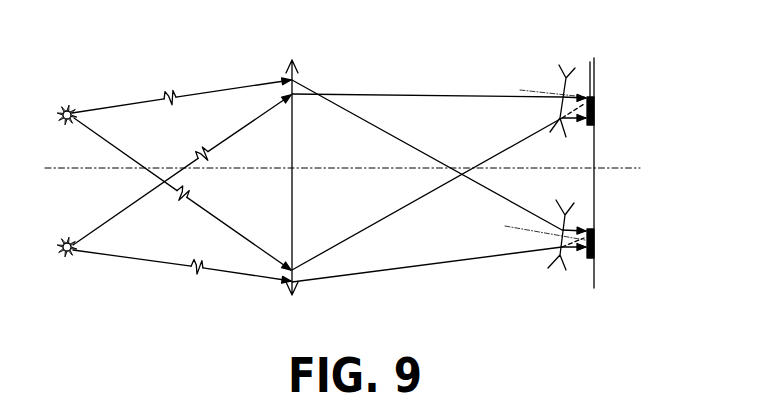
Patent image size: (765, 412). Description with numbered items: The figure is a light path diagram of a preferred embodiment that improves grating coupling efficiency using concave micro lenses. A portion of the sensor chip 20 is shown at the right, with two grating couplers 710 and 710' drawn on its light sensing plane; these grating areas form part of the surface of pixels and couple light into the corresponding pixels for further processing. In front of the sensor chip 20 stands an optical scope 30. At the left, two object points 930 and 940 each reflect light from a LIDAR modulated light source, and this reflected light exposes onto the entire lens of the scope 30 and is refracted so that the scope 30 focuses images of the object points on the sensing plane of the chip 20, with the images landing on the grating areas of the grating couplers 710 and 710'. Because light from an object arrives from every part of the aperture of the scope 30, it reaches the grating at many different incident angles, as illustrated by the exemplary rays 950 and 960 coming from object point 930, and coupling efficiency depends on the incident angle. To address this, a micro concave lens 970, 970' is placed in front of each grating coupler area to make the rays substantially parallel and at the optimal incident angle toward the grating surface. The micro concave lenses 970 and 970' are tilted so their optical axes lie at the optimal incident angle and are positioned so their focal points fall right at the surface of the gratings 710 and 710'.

The sensor chip 20 is at (595, 75).
The optical scope 30 is at (299, 60).
The grating coupler 710 is at (569, 75).
The grating coupler 710' is at (570, 274).
The object point 930 is at (71, 102).
The object point 940 is at (70, 262).
The incident ray 950 is at (512, 202).
The incident ray 960 is at (456, 261).
The micro concave lens 970 is at (523, 91).
The micro concave lens 970' is at (595, 228).